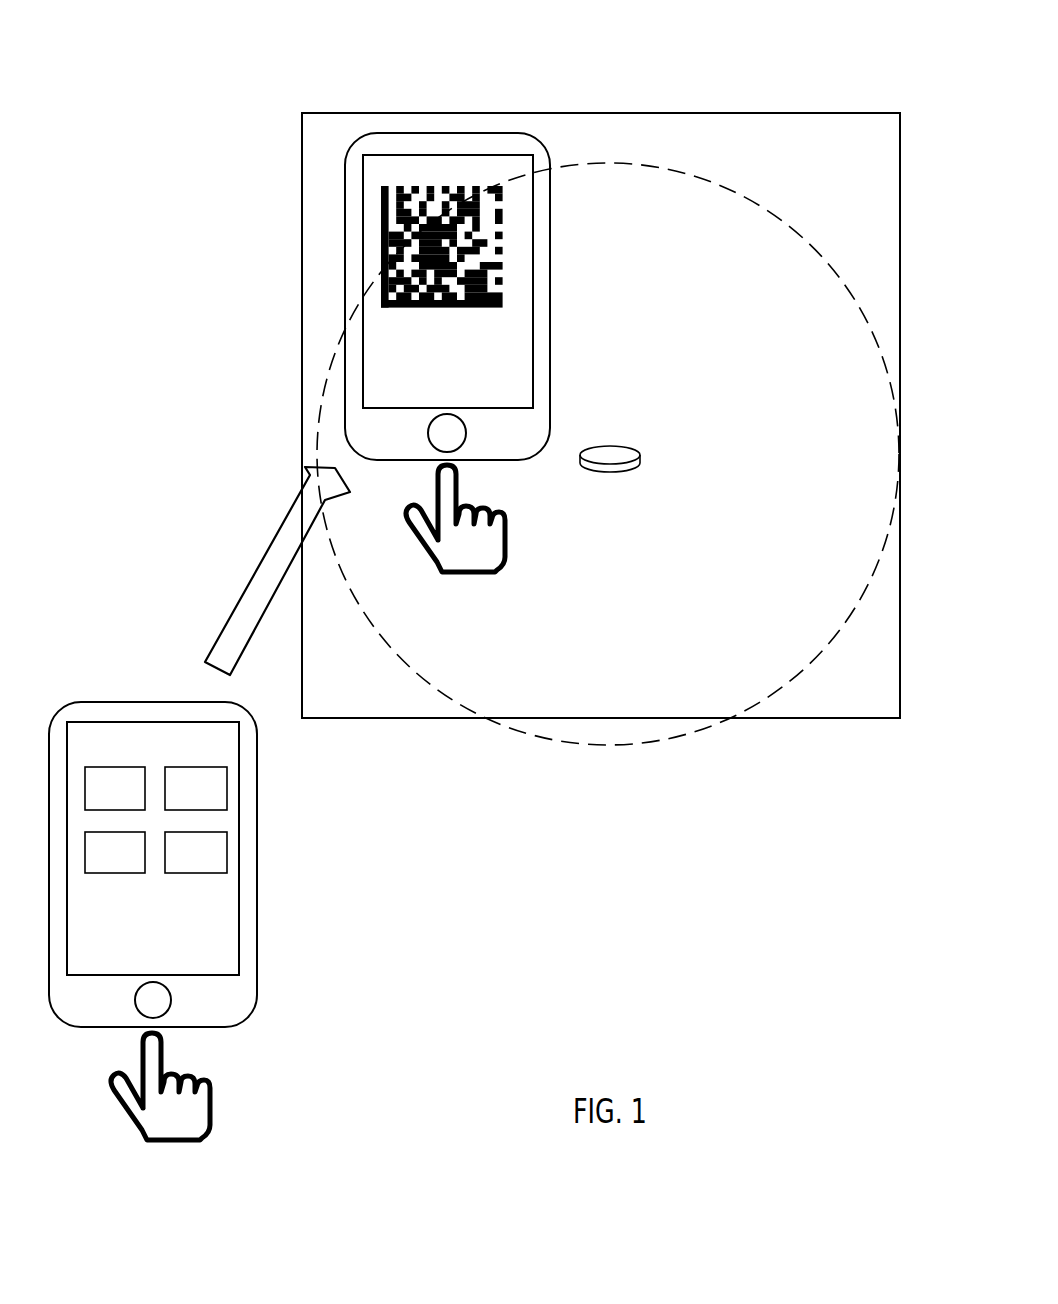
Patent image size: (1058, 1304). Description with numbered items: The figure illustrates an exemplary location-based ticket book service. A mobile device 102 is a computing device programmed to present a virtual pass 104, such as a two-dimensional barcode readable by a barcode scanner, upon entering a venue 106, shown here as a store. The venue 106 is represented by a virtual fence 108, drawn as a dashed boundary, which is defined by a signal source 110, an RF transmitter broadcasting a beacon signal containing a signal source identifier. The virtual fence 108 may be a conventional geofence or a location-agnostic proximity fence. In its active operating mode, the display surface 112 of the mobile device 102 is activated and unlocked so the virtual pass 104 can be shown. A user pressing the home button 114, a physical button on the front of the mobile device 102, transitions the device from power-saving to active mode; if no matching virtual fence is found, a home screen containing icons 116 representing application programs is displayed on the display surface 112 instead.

The mobile device 102 is at (344, 174).
The virtual pass 104 is at (380, 250).
The venue 106 is at (780, 112).
The virtual fence 108 is at (560, 742).
The signal source 110 is at (640, 462).
The display surface 112 is at (447, 154).
The home button 114 is at (428, 432).
The icons 116 is at (115, 767).